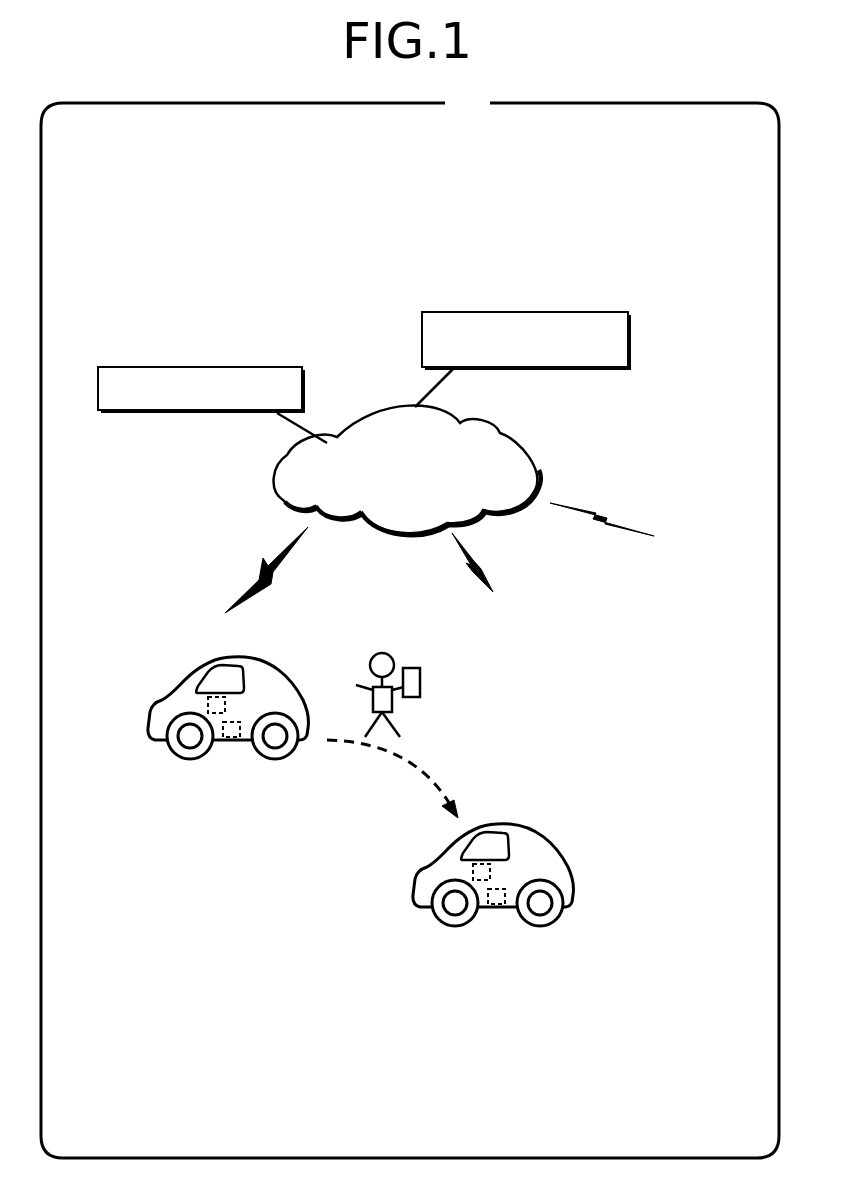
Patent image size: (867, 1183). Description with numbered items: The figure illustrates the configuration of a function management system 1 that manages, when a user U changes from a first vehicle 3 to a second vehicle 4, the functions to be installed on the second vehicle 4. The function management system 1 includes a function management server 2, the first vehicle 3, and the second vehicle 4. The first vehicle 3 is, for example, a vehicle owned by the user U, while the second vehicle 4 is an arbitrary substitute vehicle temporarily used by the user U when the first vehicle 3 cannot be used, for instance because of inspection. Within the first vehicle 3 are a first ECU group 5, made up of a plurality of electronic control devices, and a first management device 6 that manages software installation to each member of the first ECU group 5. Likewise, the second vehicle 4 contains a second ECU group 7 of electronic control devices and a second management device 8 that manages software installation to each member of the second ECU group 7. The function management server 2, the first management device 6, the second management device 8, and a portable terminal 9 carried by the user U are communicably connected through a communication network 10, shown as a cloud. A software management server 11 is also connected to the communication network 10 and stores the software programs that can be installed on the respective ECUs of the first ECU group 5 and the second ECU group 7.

The function management system 1 is at (473, 103).
The function management server 2 is at (134, 370).
The first vehicle 3 is at (228, 696).
The second vehicle 4 is at (493, 863).
The first ECU group 5 is at (232, 738).
The first management device 6 is at (222, 697).
The second ECU group 7 is at (497, 913).
The second management device 8 is at (487, 860).
The portable terminal 9 is at (408, 666).
The communication network 10 is at (363, 437).
The software management server 11 is at (613, 320).
The user U is at (375, 656).